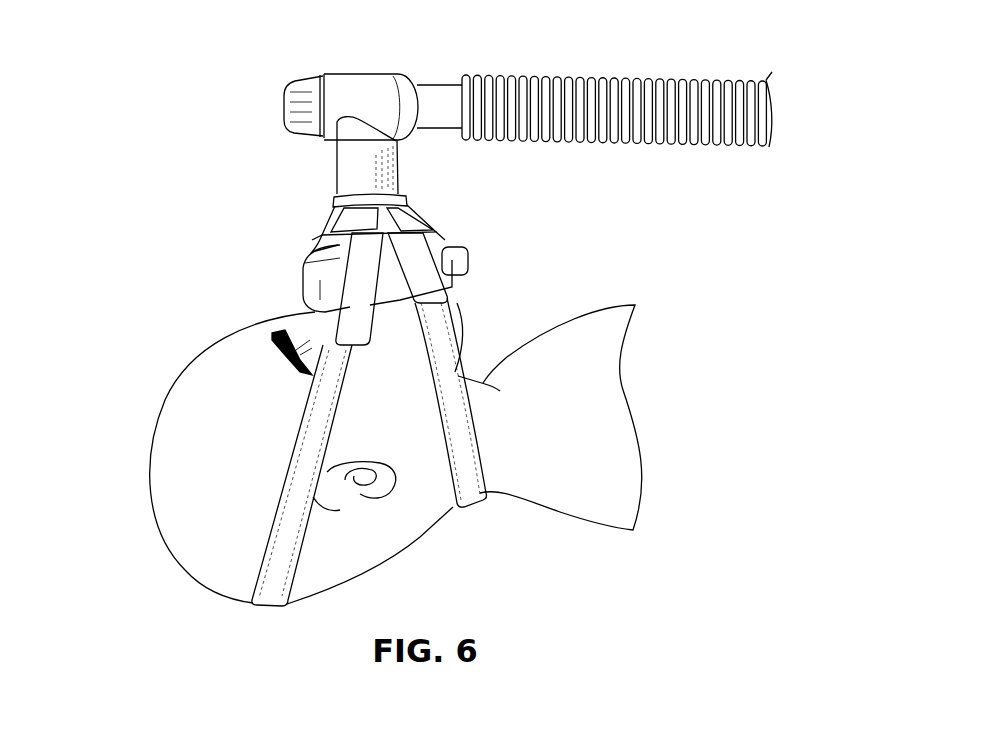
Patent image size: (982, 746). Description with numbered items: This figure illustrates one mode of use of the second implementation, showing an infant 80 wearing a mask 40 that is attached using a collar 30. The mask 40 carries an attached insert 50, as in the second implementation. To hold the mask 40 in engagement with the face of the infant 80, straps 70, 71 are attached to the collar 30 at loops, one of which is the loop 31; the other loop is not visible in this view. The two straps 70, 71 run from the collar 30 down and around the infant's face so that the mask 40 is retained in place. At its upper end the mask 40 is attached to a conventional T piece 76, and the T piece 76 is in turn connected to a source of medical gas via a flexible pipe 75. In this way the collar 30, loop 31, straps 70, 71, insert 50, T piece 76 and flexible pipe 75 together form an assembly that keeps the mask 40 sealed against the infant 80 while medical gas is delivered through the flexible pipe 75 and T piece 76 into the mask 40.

The collar 30 is at (430, 233).
The loop 31 is at (335, 231).
The mask 40 is at (337, 172).
The insert 50 is at (300, 305).
The strap 70 is at (250, 602).
The strap 71 is at (477, 507).
The flexible pipe 75 is at (685, 148).
The T piece 76 is at (338, 72).
The infant 80 is at (603, 540).